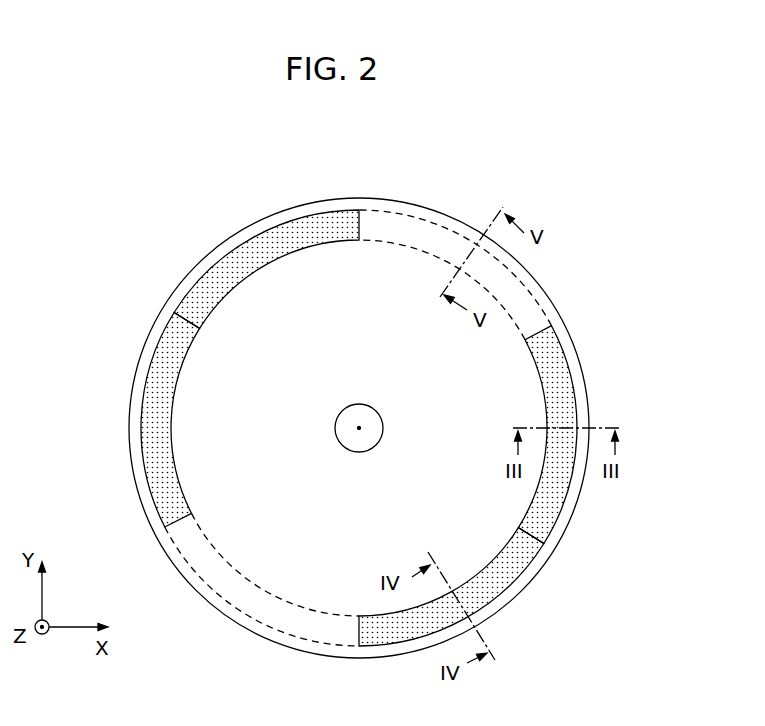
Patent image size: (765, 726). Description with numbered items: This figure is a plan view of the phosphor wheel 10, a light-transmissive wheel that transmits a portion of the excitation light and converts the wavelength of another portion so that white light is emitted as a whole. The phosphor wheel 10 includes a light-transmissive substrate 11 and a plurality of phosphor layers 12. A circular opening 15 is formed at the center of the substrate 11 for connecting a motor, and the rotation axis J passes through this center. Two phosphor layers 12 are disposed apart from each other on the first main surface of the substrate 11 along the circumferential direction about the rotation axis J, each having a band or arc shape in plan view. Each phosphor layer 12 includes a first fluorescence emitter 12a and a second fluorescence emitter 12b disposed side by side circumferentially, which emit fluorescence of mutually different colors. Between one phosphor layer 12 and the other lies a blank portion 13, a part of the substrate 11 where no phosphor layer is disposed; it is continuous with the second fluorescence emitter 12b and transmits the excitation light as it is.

The phosphor wheel 10 is at (576, 157).
The substrate 11 is at (582, 368).
The phosphor layer 12 is at (86, 245).
The first fluorescence emitter 12a is at (175, 347).
The second fluorescence emitter 12b is at (208, 290).
The blank portion 13 is at (542, 290).
The circular opening 15 is at (350, 428).
The rotation axis J is at (362, 427).